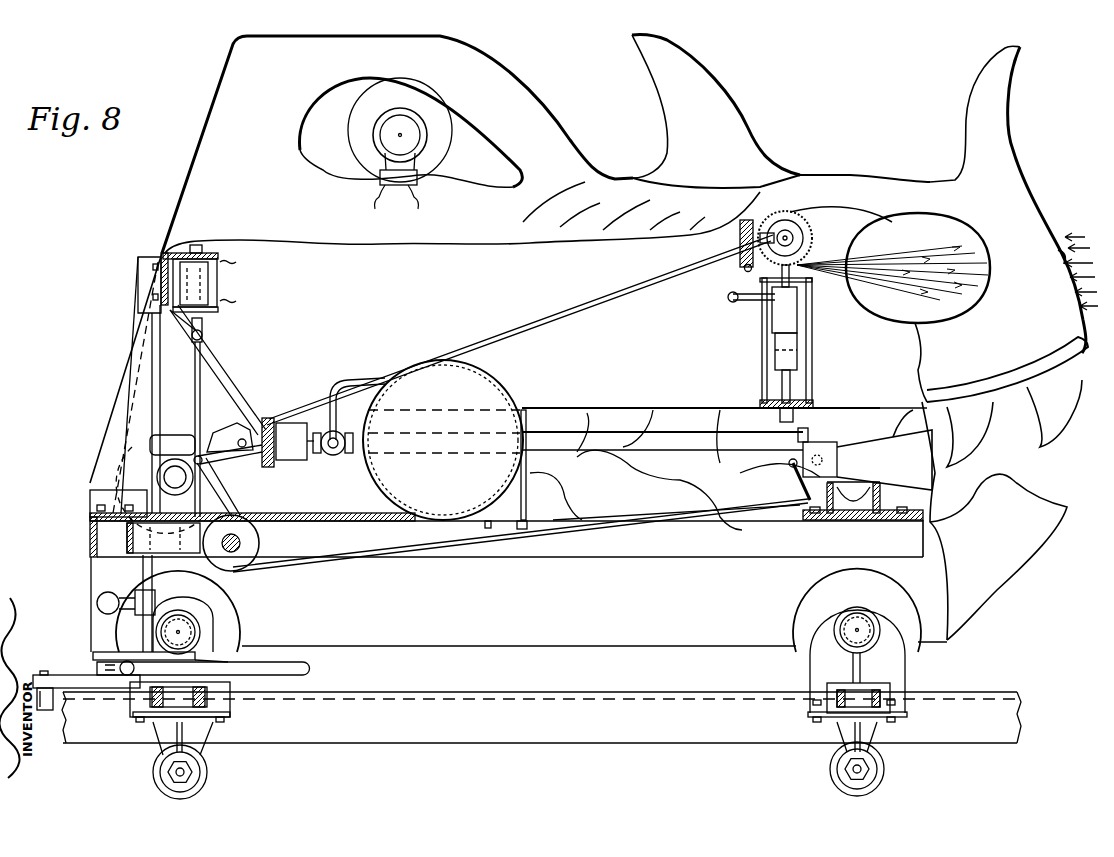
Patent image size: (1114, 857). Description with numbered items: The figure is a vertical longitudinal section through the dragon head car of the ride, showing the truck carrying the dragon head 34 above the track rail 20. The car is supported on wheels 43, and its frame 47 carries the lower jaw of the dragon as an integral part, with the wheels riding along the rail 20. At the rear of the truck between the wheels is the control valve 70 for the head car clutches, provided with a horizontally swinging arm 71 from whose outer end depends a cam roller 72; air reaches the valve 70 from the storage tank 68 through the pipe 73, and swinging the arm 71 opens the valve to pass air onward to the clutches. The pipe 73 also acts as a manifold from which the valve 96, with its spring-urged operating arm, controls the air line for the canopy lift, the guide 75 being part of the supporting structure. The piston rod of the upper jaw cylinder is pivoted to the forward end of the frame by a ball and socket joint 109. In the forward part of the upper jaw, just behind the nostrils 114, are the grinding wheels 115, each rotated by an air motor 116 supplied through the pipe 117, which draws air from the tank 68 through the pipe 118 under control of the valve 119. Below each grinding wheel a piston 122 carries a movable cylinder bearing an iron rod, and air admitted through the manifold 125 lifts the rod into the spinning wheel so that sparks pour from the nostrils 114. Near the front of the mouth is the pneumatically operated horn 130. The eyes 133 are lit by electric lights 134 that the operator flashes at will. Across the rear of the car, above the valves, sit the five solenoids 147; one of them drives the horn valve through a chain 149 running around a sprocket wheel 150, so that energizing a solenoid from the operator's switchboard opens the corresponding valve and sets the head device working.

The track rail 20 is at (553, 678).
The dragon figure body 34 is at (552, 124).
The wheels 43 is at (234, 625).
The frame 47 is at (656, 553).
The storage tank 68 is at (513, 394).
The control valve 70 is at (97, 668).
The horizontally swinging arm 71 is at (44, 674).
The cam roller 72 is at (42, 712).
The pipe 73 is at (141, 578).
The guide bracket 75 is at (186, 434).
The valve 96 is at (160, 487).
The ball and socket joint 109 is at (749, 272).
The nostrils 114 is at (973, 231).
The grinding wheels 115 is at (800, 214).
The air motor 116 is at (803, 236).
The pipe 117 is at (550, 317).
The pipe 118 is at (218, 443).
The valve 119 is at (250, 416).
The piston 122 is at (791, 388).
The manifold 125 is at (797, 332).
The pneumatically operated horn 130 is at (823, 443).
The eyes 133 is at (460, 117).
The electric lights 134 is at (378, 132).
The solenoids 147 is at (208, 290).
The chain 149 is at (372, 558).
The sprocket wheel 150 is at (258, 568).